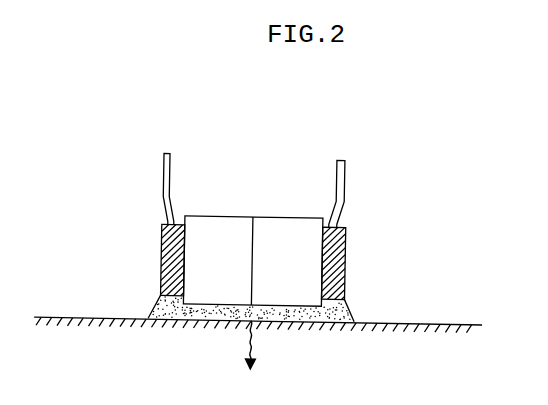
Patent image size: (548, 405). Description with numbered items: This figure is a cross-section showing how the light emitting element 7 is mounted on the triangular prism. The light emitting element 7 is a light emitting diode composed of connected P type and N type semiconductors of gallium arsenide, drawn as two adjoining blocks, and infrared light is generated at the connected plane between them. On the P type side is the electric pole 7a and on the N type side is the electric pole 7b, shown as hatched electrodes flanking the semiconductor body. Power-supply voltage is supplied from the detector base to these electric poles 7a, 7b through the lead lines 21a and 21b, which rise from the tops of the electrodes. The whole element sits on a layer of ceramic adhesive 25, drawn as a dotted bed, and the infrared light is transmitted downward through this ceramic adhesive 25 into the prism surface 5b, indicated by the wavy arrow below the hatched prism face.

The substrate 5b is at (65, 316).
The ceramic adhesive 25 is at (345, 308).
The light emitting element 7 is at (367, 233).
The electric pole 7a is at (161, 251).
The electric pole 7b is at (345, 263).
The lead line 21a is at (162, 181).
The lead line 21b is at (343, 190).